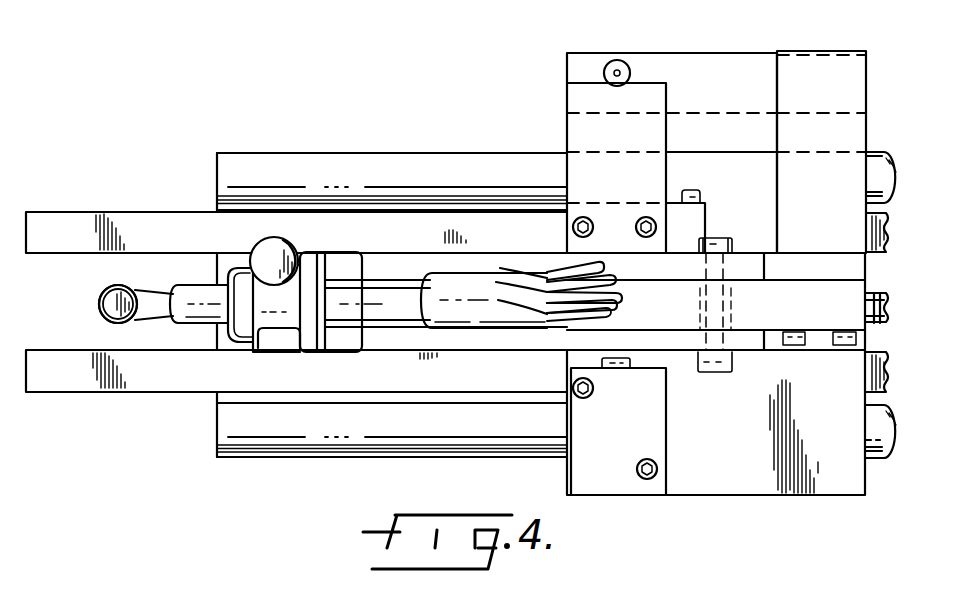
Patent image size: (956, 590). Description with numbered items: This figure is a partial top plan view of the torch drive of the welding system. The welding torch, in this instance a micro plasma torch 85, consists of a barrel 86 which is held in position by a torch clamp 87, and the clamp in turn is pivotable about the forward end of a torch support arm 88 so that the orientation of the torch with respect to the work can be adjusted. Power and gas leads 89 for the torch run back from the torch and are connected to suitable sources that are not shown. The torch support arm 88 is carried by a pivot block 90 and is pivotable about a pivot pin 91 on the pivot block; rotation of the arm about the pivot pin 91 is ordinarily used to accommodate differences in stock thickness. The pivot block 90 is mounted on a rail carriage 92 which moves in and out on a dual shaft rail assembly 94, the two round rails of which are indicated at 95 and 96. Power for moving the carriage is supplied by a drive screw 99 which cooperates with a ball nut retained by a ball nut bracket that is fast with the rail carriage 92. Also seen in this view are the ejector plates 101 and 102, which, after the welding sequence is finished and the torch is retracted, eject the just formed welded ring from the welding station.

The micro plasma torch 85 is at (90, 300).
The barrel 86 is at (123, 288).
The torch clamp 87 is at (350, 258).
The torch support arm 88 is at (404, 331).
The power and gas leads 89 is at (492, 311).
The pivot block 90 is at (805, 66).
The pivot pin 91 is at (716, 234).
The rail carriage 92 is at (726, 491).
The dual shaft rail assembly 94 is at (352, 128).
The rail 95 is at (330, 456).
The rail 96 is at (270, 152).
The drive screw 99 is at (868, 305).
The ejector plate 101 is at (91, 216).
The ejector plate 102 is at (135, 386).